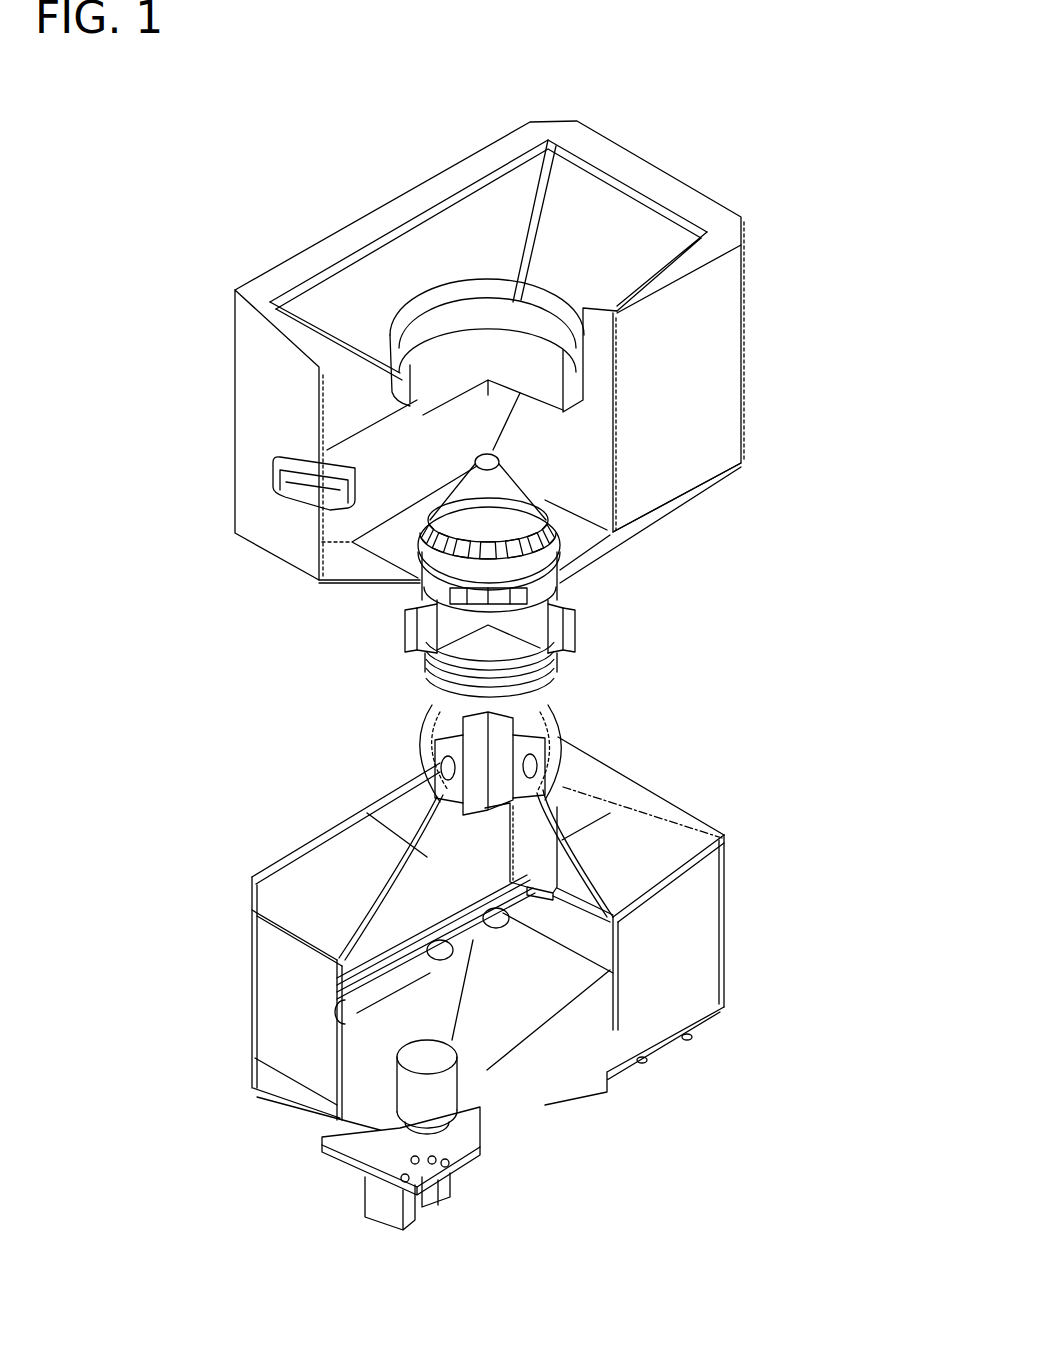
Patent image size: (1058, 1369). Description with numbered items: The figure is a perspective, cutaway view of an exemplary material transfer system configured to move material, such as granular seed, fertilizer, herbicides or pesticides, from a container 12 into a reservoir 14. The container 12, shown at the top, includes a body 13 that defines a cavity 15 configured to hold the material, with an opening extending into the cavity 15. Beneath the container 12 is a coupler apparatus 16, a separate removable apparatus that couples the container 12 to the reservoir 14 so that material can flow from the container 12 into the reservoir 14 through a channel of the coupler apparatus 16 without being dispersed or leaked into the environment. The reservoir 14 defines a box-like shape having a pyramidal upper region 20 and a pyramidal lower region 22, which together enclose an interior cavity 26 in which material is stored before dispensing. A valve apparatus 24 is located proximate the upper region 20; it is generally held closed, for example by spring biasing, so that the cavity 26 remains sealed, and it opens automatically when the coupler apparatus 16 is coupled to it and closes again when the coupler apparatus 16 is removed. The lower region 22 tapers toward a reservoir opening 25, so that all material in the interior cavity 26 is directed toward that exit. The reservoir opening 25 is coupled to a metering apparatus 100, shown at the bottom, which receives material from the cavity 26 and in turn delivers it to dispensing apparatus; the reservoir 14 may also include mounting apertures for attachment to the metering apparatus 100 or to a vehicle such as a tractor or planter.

The container 12 is at (495, 352).
The body 13 is at (670, 380).
The cavity 15 is at (553, 467).
The coupler apparatus 16 is at (377, 648).
The reservoir 14 is at (493, 937).
The valve apparatus 24 is at (557, 733).
The pyramidal upper region 20 is at (652, 862).
The interior cavity 26 is at (563, 1038).
The pyramidal lower region 22 is at (287, 1093).
The reservoir opening 25 is at (407, 1135).
The metering apparatus 100 is at (467, 1080).